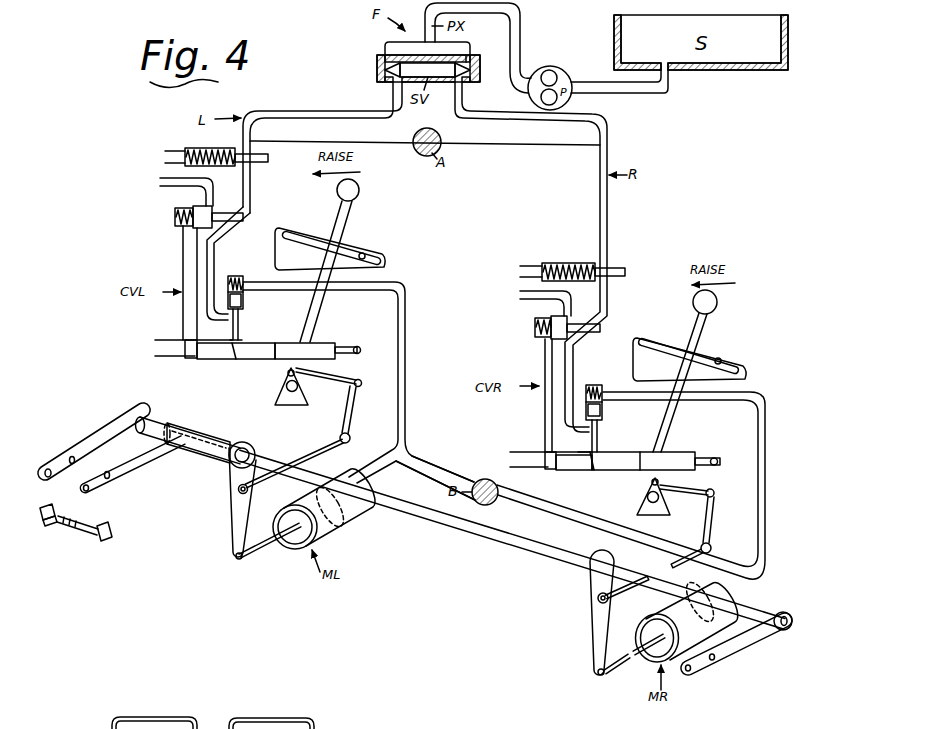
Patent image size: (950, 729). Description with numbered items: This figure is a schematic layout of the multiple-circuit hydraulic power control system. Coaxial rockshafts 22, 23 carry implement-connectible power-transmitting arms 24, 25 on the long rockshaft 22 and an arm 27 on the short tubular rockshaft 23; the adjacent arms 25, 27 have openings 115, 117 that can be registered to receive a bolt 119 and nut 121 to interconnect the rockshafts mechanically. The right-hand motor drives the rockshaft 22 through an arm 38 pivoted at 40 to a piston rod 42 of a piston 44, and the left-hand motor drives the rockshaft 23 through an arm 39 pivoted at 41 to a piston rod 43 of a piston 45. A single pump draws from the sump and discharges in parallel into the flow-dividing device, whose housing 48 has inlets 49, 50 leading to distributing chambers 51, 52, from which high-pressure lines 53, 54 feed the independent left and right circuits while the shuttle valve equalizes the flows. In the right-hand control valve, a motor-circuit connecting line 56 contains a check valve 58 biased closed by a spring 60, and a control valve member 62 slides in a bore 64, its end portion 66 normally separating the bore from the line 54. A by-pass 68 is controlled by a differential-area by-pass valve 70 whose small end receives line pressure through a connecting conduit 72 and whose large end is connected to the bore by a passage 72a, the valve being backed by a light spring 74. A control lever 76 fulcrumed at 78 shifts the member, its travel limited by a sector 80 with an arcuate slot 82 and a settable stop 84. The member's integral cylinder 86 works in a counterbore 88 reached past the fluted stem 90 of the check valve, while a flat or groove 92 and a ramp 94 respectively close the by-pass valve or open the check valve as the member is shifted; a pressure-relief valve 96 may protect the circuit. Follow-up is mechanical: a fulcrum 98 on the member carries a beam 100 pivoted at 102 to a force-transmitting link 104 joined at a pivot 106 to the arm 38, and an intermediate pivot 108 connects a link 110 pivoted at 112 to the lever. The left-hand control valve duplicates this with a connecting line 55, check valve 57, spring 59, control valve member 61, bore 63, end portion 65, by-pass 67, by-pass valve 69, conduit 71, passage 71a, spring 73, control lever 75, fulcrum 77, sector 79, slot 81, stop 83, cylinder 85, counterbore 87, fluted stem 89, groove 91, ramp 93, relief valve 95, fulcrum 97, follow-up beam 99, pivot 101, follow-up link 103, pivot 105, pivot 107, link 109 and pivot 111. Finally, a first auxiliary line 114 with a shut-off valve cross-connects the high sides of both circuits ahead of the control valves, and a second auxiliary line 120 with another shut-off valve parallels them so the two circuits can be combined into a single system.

The rockshaft 22 is at (521, 545).
The rockshaft 23 is at (207, 437).
The power-transmitting arm 24 is at (718, 667).
The power-transmitting arm 25 is at (92, 428).
The power-transmitting arm 27 is at (139, 460).
The arm 38 is at (592, 628).
The arm 39 is at (232, 521).
The pivotal connection 40 is at (597, 673).
The pivotal connection 41 is at (240, 562).
The piston rod 42 is at (622, 666).
The piston rod 43 is at (268, 548).
The piston 44 is at (648, 662).
The piston 45 is at (297, 537).
The housing 48 is at (379, 66).
The left-hand inlet 49 is at (385, 46).
The right-hand inlet 50 is at (471, 58).
The left-hand distributing chamber 51 is at (390, 72).
The right-hand distributing chamber 52 is at (466, 80).
The high-pressure line 53 is at (312, 112).
The high-pressure line 54 is at (601, 116).
The motor-circuit connecting line 55 is at (406, 330).
The motor-circuit connecting line 56 is at (767, 460).
The check valve 57 is at (243, 298).
The check valve 58 is at (603, 410).
The spring 59 is at (236, 276).
The spring 60 is at (598, 385).
The control valve member 61 is at (240, 360).
The control valve member 62 is at (574, 470).
The bore 63 is at (155, 340).
The bore 64 is at (524, 452).
The end portion 65 is at (191, 358).
The end portion 66 is at (550, 469).
The by-pass 67 is at (160, 178).
The by-pass 68 is at (520, 292).
The by-pass valve 69 is at (178, 208).
The by-pass valve 70 is at (552, 318).
The connecting conduit 71 is at (236, 221).
The passage 71a is at (183, 318).
The connecting conduit 72 is at (596, 330).
The passage 72a is at (545, 412).
The spring 73 is at (175, 222).
The spring 74 is at (535, 328).
The control lever 75 is at (360, 190).
The control lever 76 is at (719, 302).
The fulcrum 77 is at (291, 398).
The fulcrum 78 is at (658, 511).
The sector 79 is at (386, 265).
The sector 80 is at (747, 372).
The arcuate slot 81 is at (345, 243).
The arcuate slot 82 is at (716, 347).
The settable stop 83 is at (366, 255).
The settable stop 84 is at (722, 360).
The integral cylinder 85 is at (325, 348).
The integral cylinder 86 is at (690, 452).
The counterbore 87 is at (299, 342).
The counterbore 88 is at (660, 440).
The fluted stem 89 is at (240, 334).
The fluted stem 90 is at (598, 446).
The flat or groove 91 is at (230, 338).
The flat or groove 92 is at (589, 450).
The ramp 93 is at (232, 345).
The ramp 94 is at (594, 468).
The pressure-relief valve 95 is at (172, 149).
The pressure-relief valve 96 is at (578, 262).
The fulcrum 97 is at (358, 347).
The fulcrum 98 is at (719, 458).
The follow-up means 99 is at (352, 410).
The beam 100 is at (710, 520).
The pivot 101 is at (350, 438).
The pivot 102 is at (712, 548).
The follow-up link 103 is at (316, 452).
The force-transmitting link 104 is at (664, 566).
The pivot 105 is at (238, 489).
The pivot 106 is at (597, 598).
The pivot 107 is at (362, 383).
The pivot 108 is at (715, 493).
The link 109 is at (298, 388).
The link 110 is at (668, 490).
The pivot 111 is at (288, 373).
The pivot 112 is at (652, 481).
The first auxiliary fluid-pressure line 114 is at (491, 146).
The opening 115 is at (71, 456).
The opening 117 is at (109, 479).
The bolt 119 is at (100, 540).
The second auxiliary fluid line 120 is at (442, 460).
The nut 121 is at (47, 523).